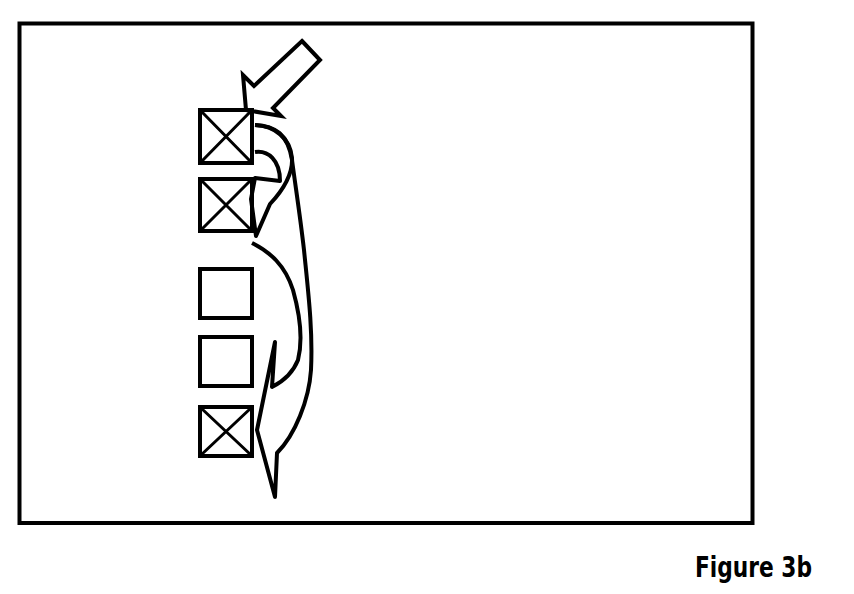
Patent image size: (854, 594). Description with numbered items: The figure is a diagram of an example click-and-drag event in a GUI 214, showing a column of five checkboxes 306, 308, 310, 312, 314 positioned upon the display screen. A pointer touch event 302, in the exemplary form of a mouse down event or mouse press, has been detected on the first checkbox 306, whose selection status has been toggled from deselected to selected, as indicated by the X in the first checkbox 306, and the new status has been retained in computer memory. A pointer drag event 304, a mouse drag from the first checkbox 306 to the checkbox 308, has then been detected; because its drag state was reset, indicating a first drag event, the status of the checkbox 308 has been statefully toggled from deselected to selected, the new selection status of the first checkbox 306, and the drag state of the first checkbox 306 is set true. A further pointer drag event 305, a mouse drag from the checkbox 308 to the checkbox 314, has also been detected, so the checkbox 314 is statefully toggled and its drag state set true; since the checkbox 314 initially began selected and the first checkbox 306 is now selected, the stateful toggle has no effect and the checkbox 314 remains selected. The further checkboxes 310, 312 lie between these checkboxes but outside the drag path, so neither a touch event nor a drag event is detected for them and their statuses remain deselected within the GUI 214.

The GUI 214 is at (754, 272).
The pointer touch event 302 is at (285, 116).
The pointer drag event 304 is at (283, 168).
The further pointer drag event 305 is at (308, 318).
The first checkbox 306 is at (197, 137).
The checkbox 308 is at (197, 206).
The further checkbox 310 is at (197, 293).
The further checkbox 312 is at (197, 361).
The checkbox 314 is at (197, 430).